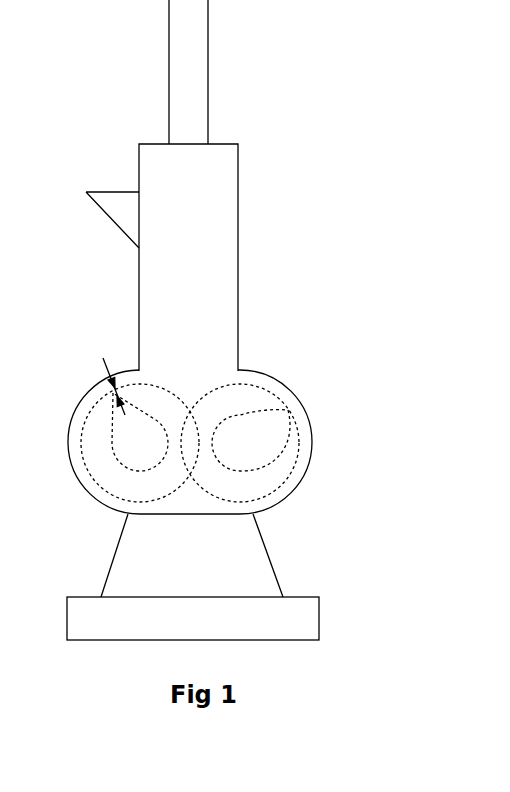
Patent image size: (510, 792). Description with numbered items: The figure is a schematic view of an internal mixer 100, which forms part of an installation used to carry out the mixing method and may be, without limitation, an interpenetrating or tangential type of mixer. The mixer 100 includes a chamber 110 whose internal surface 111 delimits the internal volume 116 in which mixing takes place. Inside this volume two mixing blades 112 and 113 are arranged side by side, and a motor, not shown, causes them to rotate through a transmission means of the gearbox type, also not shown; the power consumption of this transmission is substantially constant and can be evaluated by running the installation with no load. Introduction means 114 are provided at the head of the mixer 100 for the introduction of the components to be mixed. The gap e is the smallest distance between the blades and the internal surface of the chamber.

The internal mixer 100 is at (302, 182).
The introduction means 114 is at (123, 217).
The chamber 110 is at (283, 505).
The internal surface 111 is at (285, 482).
The internal volume 116 is at (212, 426).
The mixing blade 113 is at (120, 443).
The mixing blade 112 is at (258, 440).
The gap e is at (104, 386).